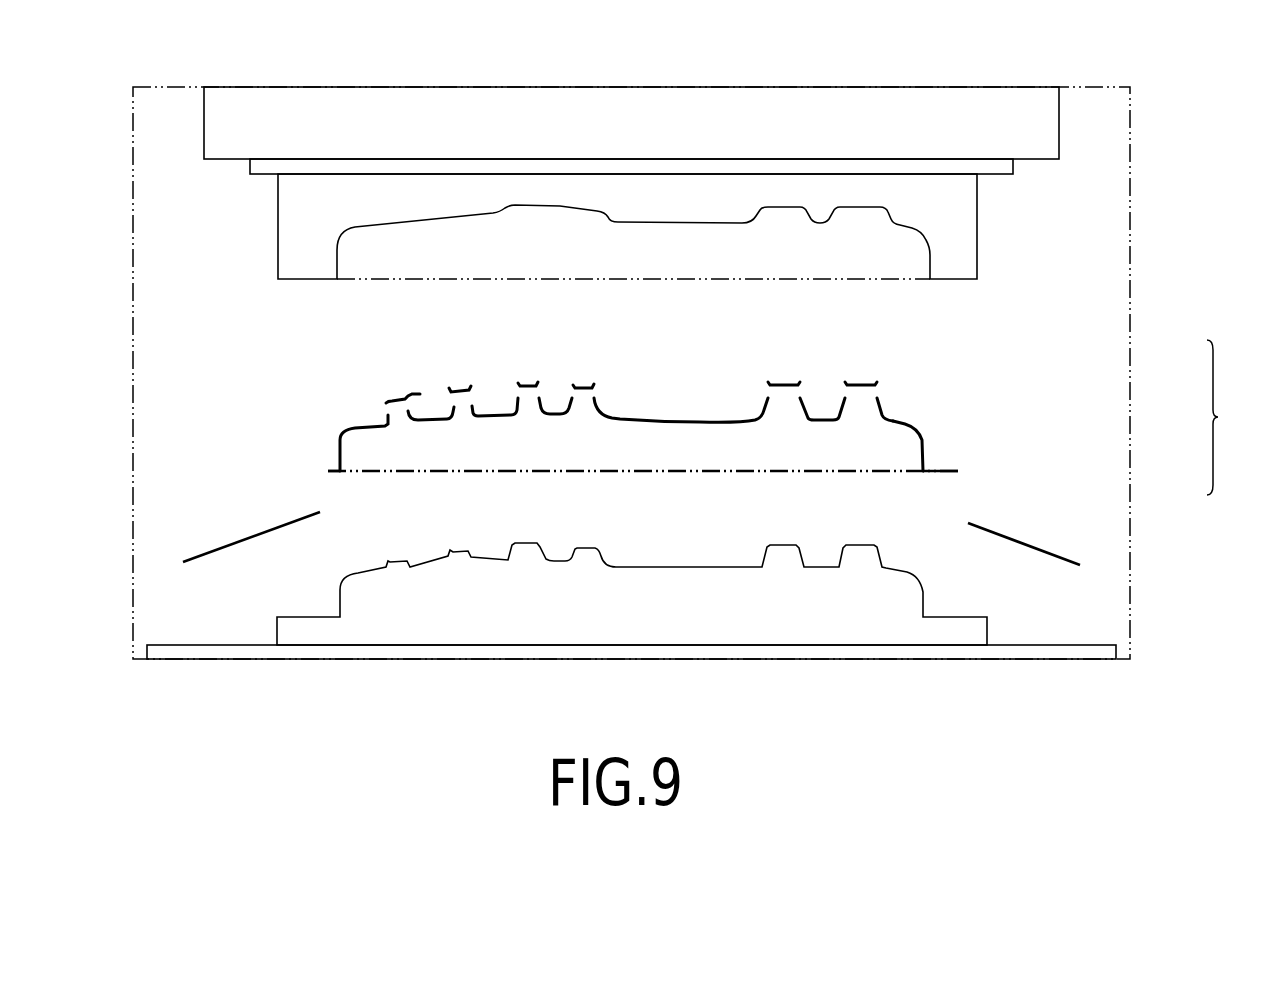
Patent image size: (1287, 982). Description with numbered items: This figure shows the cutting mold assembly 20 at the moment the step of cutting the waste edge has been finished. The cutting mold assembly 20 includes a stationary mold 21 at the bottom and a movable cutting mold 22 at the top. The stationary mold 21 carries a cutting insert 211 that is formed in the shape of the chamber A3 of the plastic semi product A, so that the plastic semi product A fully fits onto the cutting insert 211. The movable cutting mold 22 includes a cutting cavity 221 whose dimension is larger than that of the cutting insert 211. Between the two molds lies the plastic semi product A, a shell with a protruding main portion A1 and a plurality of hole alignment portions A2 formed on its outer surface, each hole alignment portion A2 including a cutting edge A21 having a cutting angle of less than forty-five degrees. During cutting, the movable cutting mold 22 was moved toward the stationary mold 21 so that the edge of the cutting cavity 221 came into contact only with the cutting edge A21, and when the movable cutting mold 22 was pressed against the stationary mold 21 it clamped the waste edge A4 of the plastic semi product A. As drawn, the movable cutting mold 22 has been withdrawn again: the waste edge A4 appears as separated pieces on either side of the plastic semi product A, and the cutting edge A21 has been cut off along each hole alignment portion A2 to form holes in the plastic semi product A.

The cutting mold assembly 20 is at (1229, 417).
The stationary mold 21 is at (1057, 645).
The cutting insert 211 is at (743, 623).
The movable cutting mold 22 is at (1013, 166).
The cutting cavity 221 is at (920, 235).
The plastic semi product A is at (656, 430).
The protruding main portion A1 is at (923, 437).
The hole alignment portion A2 is at (880, 408).
The cutting edge A21 is at (420, 394).
The chamber A3 is at (375, 452).
The waste edge A4 is at (265, 530).